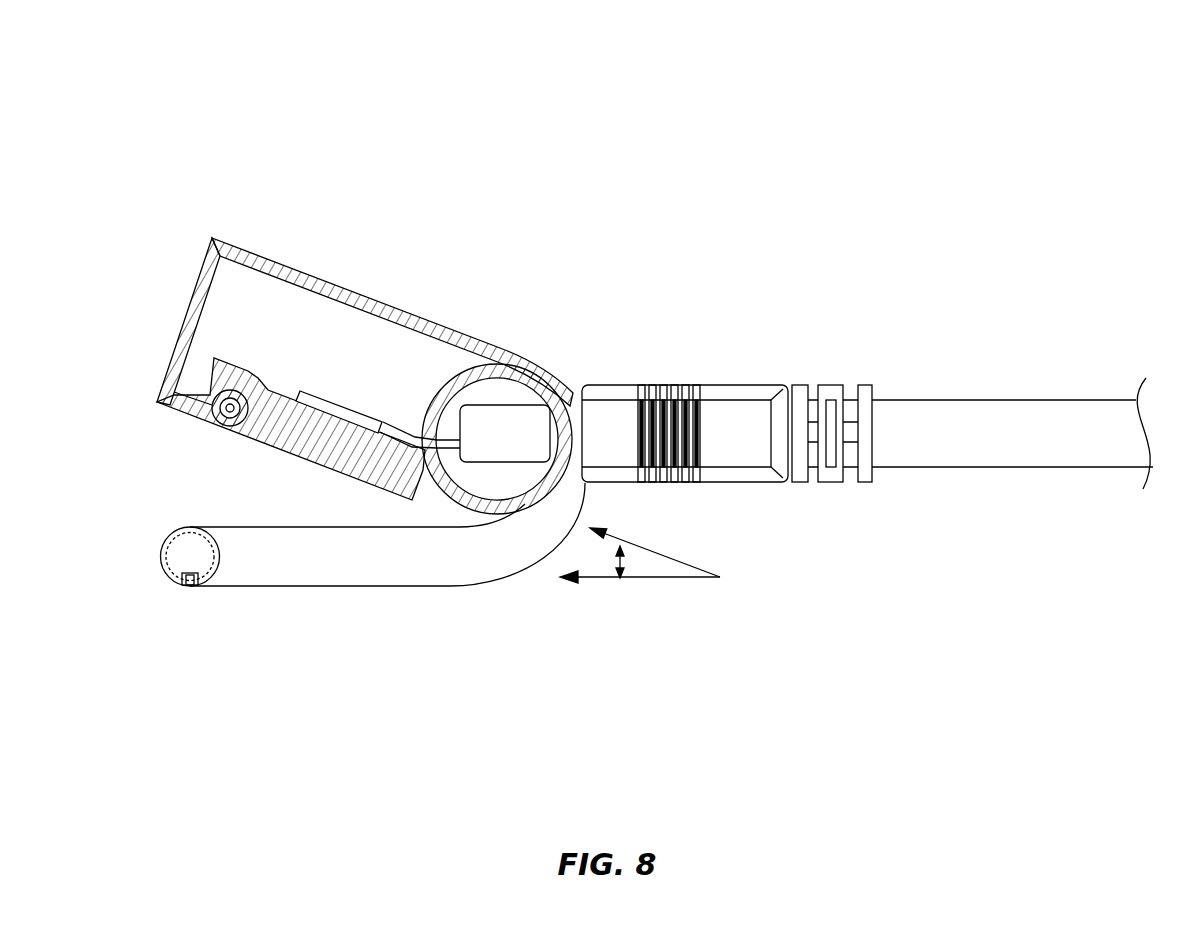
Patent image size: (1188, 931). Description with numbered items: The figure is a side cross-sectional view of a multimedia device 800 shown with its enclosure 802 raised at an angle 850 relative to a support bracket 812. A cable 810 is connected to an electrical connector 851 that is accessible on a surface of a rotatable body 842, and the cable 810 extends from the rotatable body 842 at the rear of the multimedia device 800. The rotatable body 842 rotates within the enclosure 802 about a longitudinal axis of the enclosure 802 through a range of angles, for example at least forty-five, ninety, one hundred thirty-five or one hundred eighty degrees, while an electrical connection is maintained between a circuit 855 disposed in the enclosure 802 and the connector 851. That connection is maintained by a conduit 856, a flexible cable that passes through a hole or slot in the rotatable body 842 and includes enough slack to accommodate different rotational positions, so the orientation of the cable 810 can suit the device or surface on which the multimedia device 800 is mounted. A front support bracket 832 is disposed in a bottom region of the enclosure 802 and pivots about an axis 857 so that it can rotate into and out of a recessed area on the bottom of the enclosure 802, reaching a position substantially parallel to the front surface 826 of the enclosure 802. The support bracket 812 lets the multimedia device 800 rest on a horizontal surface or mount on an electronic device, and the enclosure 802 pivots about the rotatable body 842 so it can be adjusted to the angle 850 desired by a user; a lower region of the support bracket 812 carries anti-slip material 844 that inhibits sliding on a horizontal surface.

The multimedia device 800 is at (158, 116).
The enclosure 802 is at (350, 304).
The front surface 826 is at (182, 345).
The rotatable body 842 is at (490, 362).
The electrical connector 851 is at (522, 405).
The cable 810 is at (733, 385).
The circuit 855 is at (324, 391).
The conduit 856 is at (404, 430).
The axis 857 is at (232, 420).
The front support bracket 832 is at (250, 442).
The anti-slip material 844 is at (190, 588).
The support bracket 812 is at (331, 588).
The angle 850 is at (640, 555).